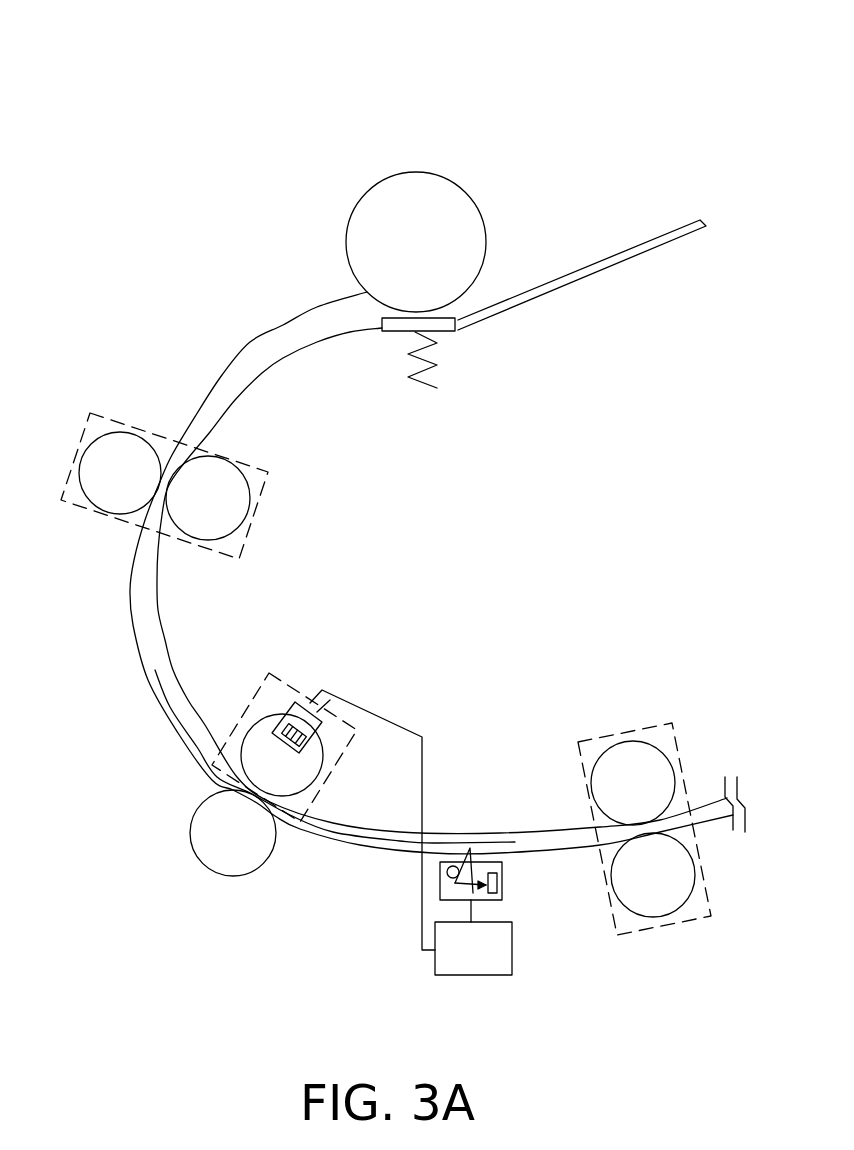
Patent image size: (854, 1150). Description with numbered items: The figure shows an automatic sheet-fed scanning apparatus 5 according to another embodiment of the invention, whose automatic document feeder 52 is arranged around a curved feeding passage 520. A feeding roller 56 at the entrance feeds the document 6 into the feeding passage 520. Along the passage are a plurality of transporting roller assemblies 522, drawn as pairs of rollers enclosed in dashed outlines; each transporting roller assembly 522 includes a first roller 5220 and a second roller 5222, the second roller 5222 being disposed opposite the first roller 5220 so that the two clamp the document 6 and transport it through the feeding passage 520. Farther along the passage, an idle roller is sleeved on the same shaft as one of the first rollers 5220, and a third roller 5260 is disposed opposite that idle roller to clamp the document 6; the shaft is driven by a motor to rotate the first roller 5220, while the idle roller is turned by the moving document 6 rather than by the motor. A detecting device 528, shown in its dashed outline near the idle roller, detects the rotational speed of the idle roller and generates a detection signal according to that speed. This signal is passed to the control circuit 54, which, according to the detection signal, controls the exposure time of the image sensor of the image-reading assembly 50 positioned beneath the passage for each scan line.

The automatic sheet-fed scanning apparatus 5 is at (247, 108).
The document 6 is at (165, 703).
The image-reading assembly 50 is at (503, 877).
The automatic document feeder 52 is at (466, 538).
The control circuit 54 is at (512, 945).
The feeding roller 56 is at (455, 182).
The feeding passage 520 is at (157, 617).
The transporting roller assembly 522 is at (386, 643).
The detecting device 528 is at (287, 685).
The first roller 5220 is at (245, 467).
The second roller 5222 is at (108, 432).
The third roller 5260 is at (197, 820).